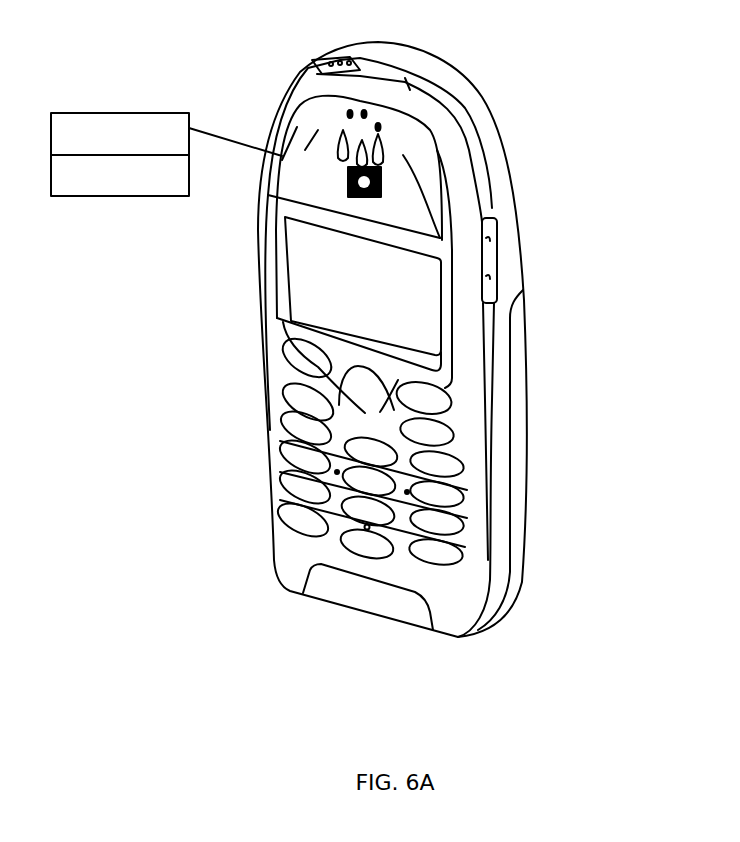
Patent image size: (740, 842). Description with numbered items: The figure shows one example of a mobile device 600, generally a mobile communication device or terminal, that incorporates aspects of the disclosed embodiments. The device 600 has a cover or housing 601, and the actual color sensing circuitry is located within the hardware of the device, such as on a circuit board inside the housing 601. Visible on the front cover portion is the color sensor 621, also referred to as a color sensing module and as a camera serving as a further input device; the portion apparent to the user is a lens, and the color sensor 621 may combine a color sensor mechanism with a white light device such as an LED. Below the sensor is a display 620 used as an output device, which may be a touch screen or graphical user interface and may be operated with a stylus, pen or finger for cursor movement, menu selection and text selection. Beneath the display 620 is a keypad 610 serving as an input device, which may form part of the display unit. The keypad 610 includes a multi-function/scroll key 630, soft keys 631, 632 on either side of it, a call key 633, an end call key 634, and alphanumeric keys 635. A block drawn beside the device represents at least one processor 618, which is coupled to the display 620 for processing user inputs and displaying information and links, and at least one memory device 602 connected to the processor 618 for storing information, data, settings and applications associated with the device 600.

The mobile device 600 is at (477, 56).
The housing 601 is at (505, 210).
The memory device 602 is at (92, 196).
The keypad 610 is at (453, 574).
The processor 618 is at (92, 113).
The display 620 is at (412, 315).
The color sensor 621 is at (383, 181).
The multi-function/scroll key 630 is at (447, 380).
The soft key 631 is at (305, 362).
The soft key 632 is at (432, 397).
The call key 633 is at (308, 395).
The end call key 634 is at (433, 434).
The alphanumeric keys 635 is at (307, 523).